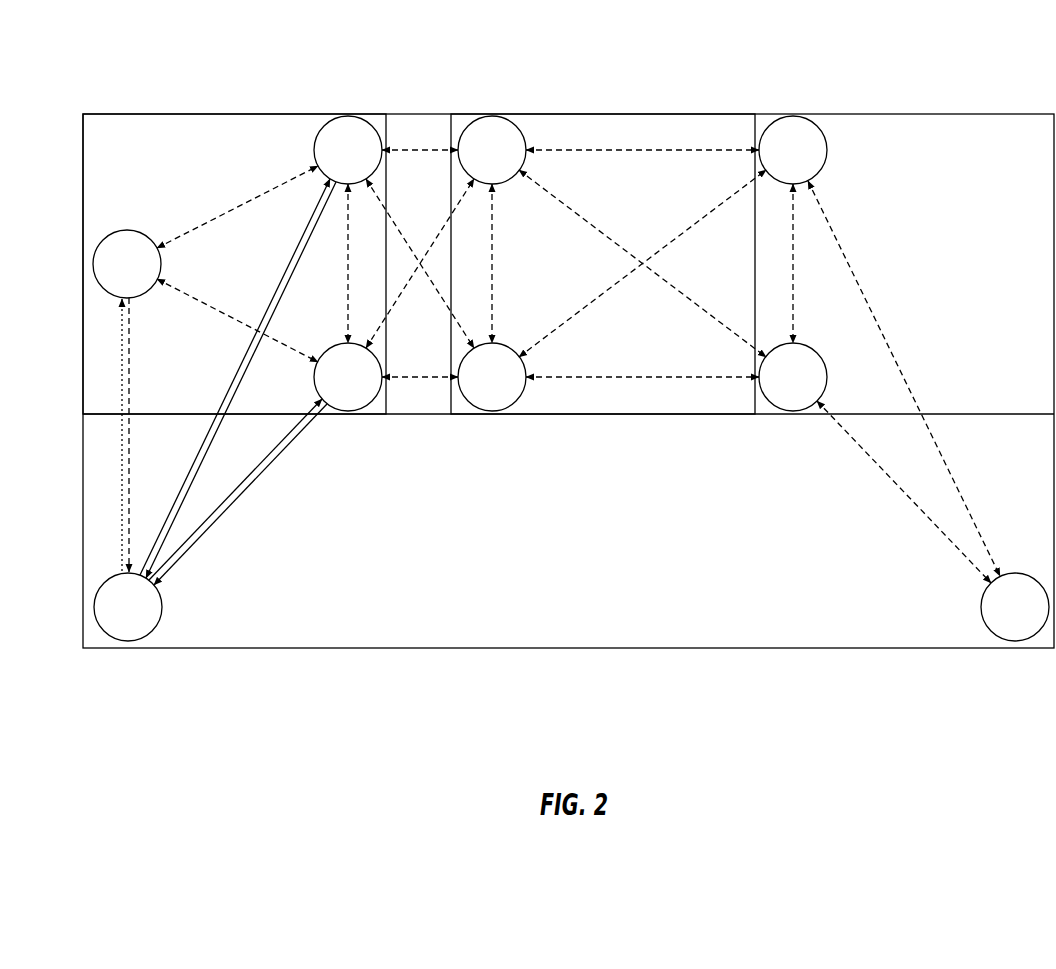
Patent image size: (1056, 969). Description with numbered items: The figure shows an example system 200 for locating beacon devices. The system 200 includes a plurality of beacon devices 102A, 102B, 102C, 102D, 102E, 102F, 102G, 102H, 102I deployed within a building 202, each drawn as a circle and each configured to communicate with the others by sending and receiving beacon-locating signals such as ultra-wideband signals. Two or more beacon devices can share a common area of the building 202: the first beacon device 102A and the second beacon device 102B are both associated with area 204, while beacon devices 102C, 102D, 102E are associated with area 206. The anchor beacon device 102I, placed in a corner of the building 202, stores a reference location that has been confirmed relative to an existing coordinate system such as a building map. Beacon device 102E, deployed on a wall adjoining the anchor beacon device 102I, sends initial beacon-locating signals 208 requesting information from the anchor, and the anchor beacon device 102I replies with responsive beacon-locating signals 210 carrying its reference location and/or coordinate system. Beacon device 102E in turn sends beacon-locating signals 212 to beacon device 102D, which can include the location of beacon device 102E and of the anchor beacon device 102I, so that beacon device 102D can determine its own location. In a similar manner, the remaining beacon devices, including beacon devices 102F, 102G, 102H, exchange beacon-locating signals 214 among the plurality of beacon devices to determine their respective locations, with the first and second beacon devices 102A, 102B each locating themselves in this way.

The system 200 is at (148, 84).
The building 202 is at (494, 654).
The area 204 is at (615, 145).
The area 206 is at (133, 152).
The initial beacon-locating signals 208 is at (131, 474).
The responsive beacon-locating signals 210 is at (119, 481).
The beacon-locating signals 212 is at (192, 297).
The beacon-locating signals 214 is at (415, 156).
The first beacon device 102A is at (471, 392).
The second beacon device 102B is at (471, 165).
The beacon device 102C is at (327, 165).
The beacon device 102D is at (327, 392).
The beacon device 102E is at (106, 279).
The beacon device 102F is at (772, 392).
The beacon device 102G is at (772, 165).
The beacon device 102H is at (994, 622).
The anchor beacon device 102I is at (108, 622).